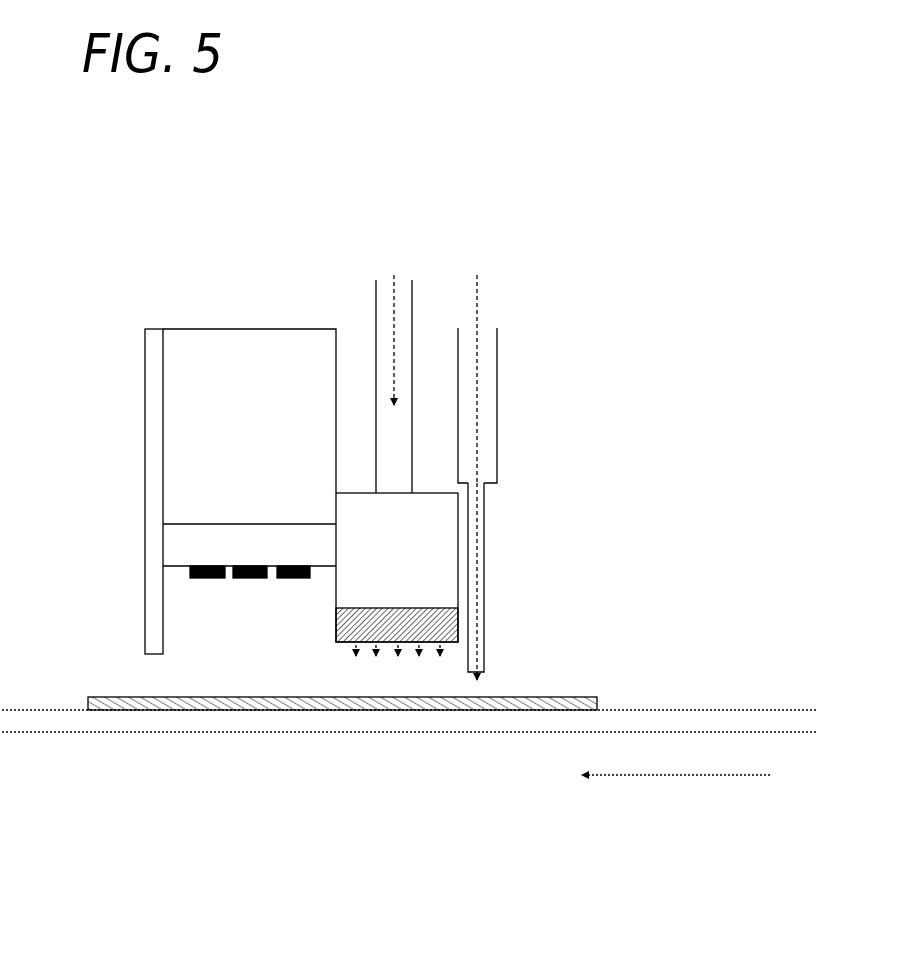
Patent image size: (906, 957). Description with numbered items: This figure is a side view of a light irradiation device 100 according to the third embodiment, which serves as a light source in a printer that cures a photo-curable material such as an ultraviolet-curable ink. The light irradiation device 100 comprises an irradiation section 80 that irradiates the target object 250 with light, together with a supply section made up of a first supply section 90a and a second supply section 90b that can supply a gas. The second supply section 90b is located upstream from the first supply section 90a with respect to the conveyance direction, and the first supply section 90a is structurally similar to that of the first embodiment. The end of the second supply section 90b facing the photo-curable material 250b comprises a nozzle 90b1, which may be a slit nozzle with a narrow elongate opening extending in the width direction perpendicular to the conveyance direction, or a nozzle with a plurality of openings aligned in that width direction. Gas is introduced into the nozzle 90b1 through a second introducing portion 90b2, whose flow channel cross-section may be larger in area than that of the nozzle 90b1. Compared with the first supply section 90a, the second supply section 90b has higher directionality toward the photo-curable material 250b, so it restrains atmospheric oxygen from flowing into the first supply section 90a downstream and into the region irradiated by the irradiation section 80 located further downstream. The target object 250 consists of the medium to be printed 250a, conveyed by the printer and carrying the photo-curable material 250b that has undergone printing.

The light irradiation device 100 is at (636, 189).
The irradiation section 80 is at (178, 548).
The first supply section 90a is at (352, 324).
The second supply section 90b is at (574, 455).
The nozzle 90b1 is at (531, 579).
The second introducing portion 90b2 is at (488, 435).
The target object 250 is at (409, 660).
The medium to be printed 250a is at (625, 728).
The photo-curable material 250b is at (582, 698).